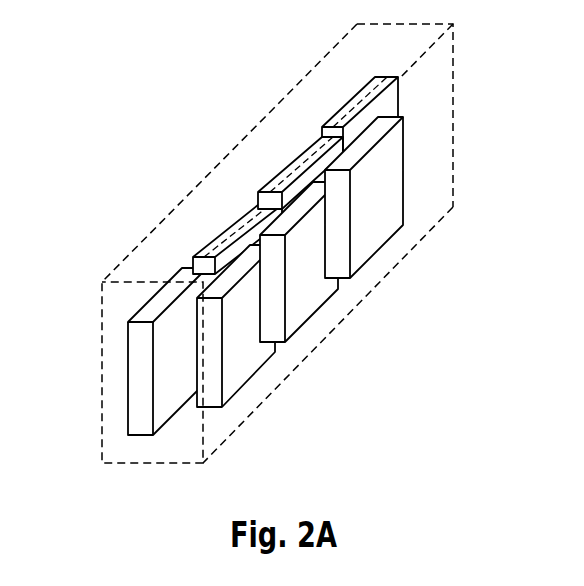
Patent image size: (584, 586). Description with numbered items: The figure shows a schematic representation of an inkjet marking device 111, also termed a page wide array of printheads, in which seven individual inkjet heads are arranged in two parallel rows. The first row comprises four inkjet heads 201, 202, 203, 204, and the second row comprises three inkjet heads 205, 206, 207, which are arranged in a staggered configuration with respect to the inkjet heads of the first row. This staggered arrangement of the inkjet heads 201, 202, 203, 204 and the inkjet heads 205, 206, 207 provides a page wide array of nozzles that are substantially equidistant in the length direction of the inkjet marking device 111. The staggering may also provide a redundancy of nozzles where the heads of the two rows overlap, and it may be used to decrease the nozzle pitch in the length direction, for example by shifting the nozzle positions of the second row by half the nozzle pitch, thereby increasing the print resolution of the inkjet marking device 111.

The inkjet marking device 111 is at (363, 330).
The inkjet head 201 is at (153, 305).
The inkjet head 202 is at (220, 242).
The inkjet head 203 is at (295, 163).
The inkjet head 204 is at (362, 97).
The inkjet head 205 is at (242, 373).
The inkjet head 206 is at (318, 264).
The inkjet head 207 is at (378, 192).